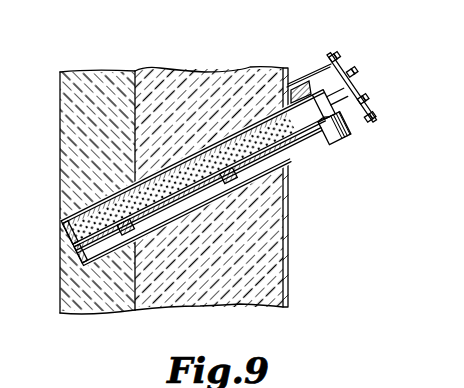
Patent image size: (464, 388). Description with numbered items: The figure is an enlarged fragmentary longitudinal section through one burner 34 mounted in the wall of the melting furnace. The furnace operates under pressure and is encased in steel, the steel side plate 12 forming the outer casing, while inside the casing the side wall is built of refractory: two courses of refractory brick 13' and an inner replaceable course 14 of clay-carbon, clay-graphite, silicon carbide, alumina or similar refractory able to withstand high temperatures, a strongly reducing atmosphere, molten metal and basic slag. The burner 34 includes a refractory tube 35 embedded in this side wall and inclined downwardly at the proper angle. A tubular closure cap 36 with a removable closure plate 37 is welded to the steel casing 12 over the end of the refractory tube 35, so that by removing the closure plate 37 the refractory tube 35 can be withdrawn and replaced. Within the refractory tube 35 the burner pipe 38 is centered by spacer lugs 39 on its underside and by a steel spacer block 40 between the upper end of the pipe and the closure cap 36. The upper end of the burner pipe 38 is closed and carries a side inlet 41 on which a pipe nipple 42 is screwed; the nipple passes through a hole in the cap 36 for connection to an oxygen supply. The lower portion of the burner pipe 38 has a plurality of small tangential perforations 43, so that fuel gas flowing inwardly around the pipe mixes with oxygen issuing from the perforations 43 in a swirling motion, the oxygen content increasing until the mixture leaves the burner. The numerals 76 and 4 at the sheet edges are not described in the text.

The side plate 12 is at (288, 272).
The courses of refractory brick 13' is at (209, 164).
The inner course 14 is at (107, 82).
The burner 34 is at (313, 70).
The refractory tube 35 is at (250, 177).
The tubular closure cap 36 is at (310, 132).
The closure plate 37 is at (347, 83).
The burner pipe 38 is at (255, 128).
The spacer lugs 39 is at (227, 162).
The steel spacer block 40 is at (299, 75).
The side inlet 41 is at (364, 89).
The pipe nipple 42 is at (350, 143).
The tangential perforations 43 is at (78, 245).
The adjacent figure label 76 is at (0, 3).
The adjacent figure label 4 is at (5, 140).